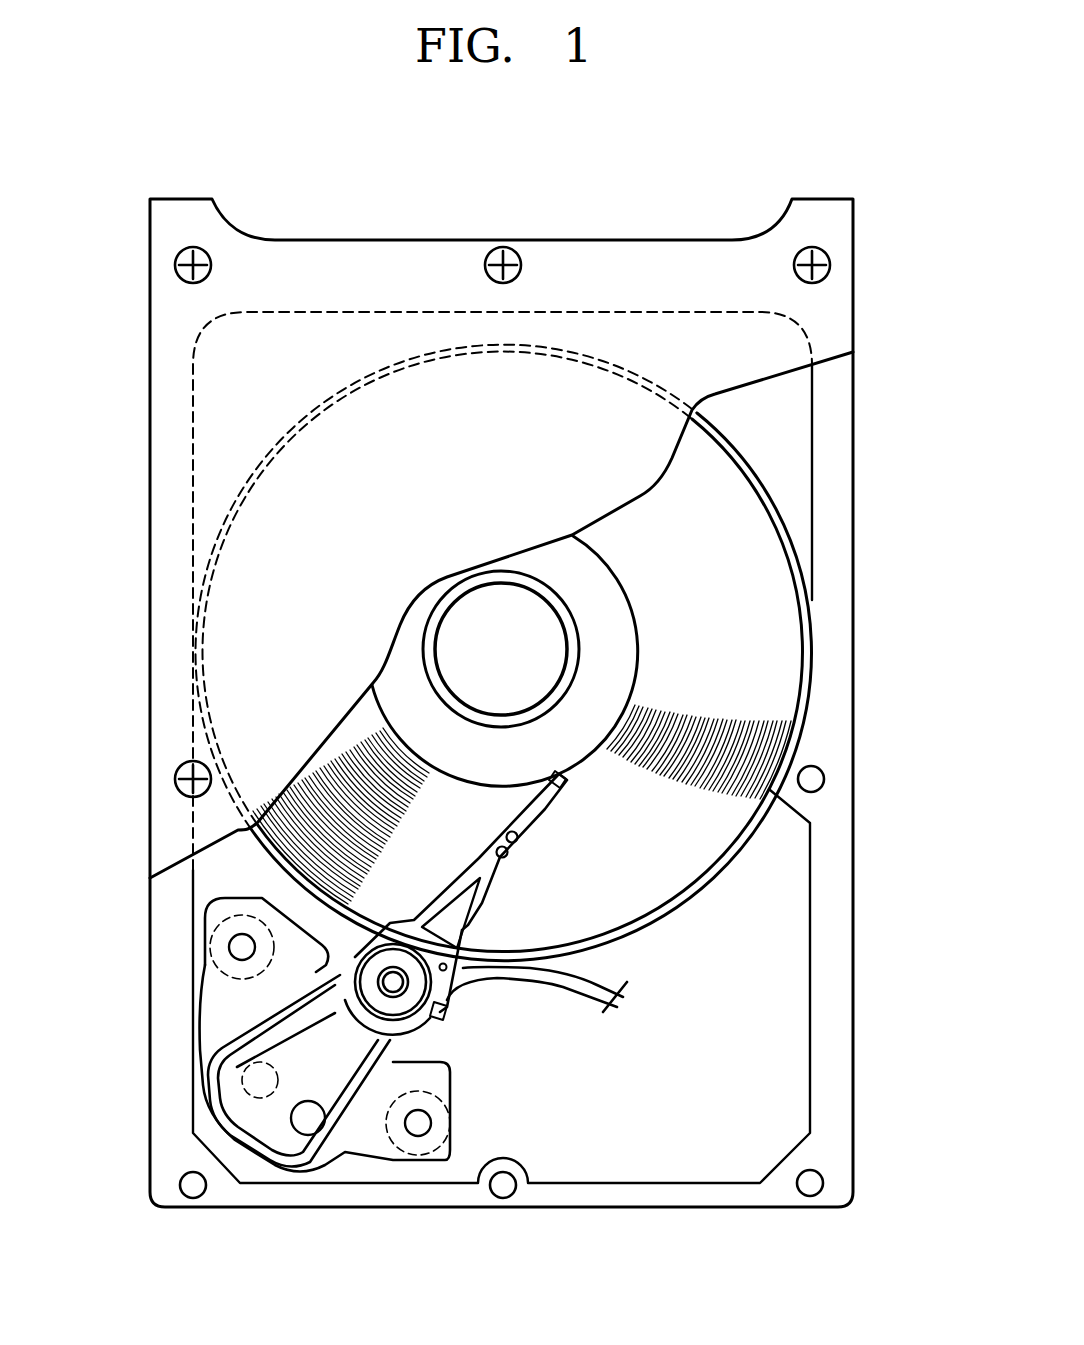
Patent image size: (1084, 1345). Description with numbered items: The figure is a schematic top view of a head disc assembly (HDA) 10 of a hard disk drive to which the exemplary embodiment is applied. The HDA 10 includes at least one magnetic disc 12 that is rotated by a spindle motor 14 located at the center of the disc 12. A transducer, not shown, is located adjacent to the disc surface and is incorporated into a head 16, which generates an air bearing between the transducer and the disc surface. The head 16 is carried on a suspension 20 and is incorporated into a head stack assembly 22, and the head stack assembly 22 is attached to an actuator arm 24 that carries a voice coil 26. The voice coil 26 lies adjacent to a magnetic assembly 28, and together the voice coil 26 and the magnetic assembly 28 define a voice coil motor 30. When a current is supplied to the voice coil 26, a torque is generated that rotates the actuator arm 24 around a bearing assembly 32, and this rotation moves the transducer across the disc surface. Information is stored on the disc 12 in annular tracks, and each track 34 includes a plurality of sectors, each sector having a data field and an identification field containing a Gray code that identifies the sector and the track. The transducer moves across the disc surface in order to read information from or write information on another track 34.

The head disc assembly 10 is at (853, 174).
The magnetic disc 12 is at (764, 582).
The spindle motor 14 is at (478, 625).
The head 16 is at (566, 788).
The suspension 20 is at (527, 827).
The head stack assembly 22 is at (492, 918).
The actuator arm 24 is at (303, 998).
The voice coil 26 is at (240, 1065).
The magnetic assembly 28 is at (240, 1017).
The voice coil motor 30 is at (363, 1138).
The bearing assembly 32 is at (403, 992).
The track 34 is at (360, 768).